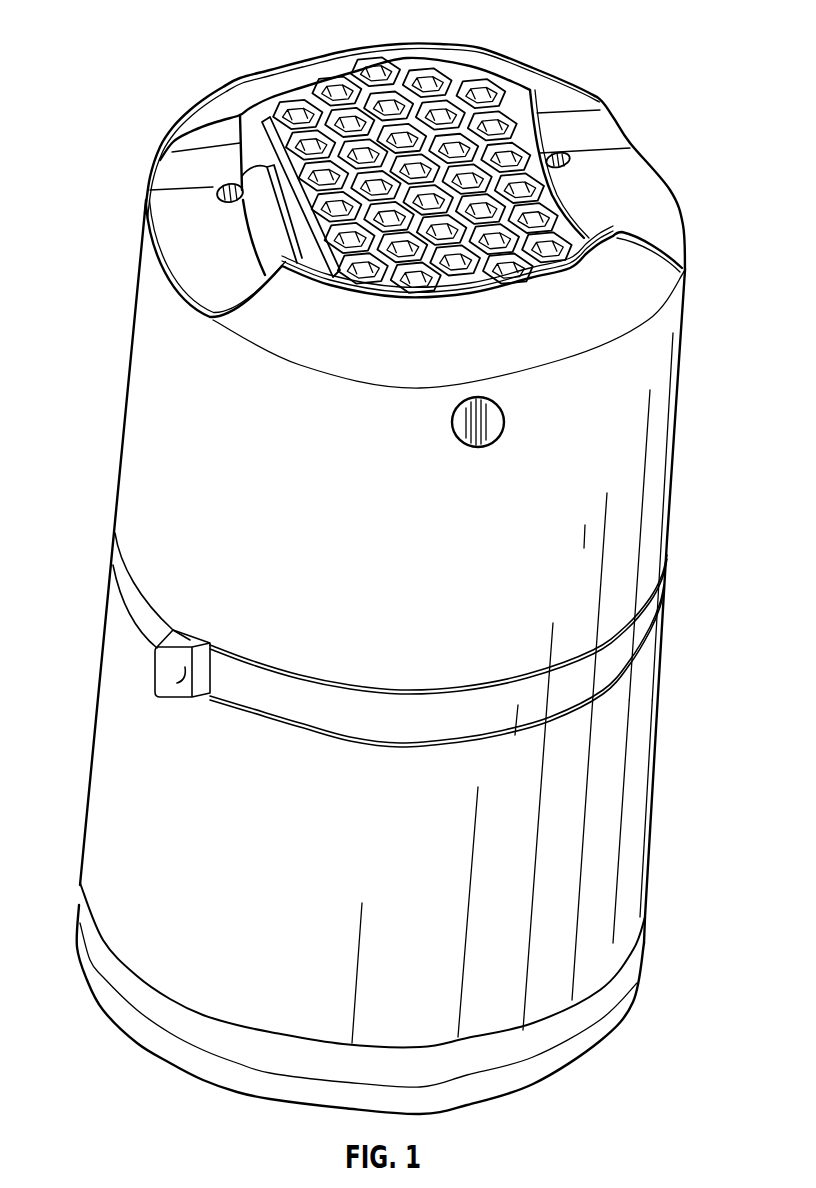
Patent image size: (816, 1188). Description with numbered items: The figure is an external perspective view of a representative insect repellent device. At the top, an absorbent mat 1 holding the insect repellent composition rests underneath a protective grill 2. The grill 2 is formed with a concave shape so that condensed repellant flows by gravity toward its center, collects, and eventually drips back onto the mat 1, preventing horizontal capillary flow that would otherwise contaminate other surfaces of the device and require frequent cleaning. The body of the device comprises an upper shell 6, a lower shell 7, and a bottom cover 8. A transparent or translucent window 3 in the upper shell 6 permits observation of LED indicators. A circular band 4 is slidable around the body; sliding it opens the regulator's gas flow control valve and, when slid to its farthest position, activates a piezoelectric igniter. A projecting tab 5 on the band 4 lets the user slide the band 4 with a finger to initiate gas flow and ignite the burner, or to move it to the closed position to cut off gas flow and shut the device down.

The absorbent mat 1 is at (292, 218).
The protective grill 2 is at (507, 104).
The window 3 is at (490, 433).
The circular band 4 is at (657, 603).
The projecting tab 5 is at (157, 682).
The upper shell 6 is at (660, 455).
The lower shell 7 is at (655, 783).
The bottom cover 8 is at (593, 1033).